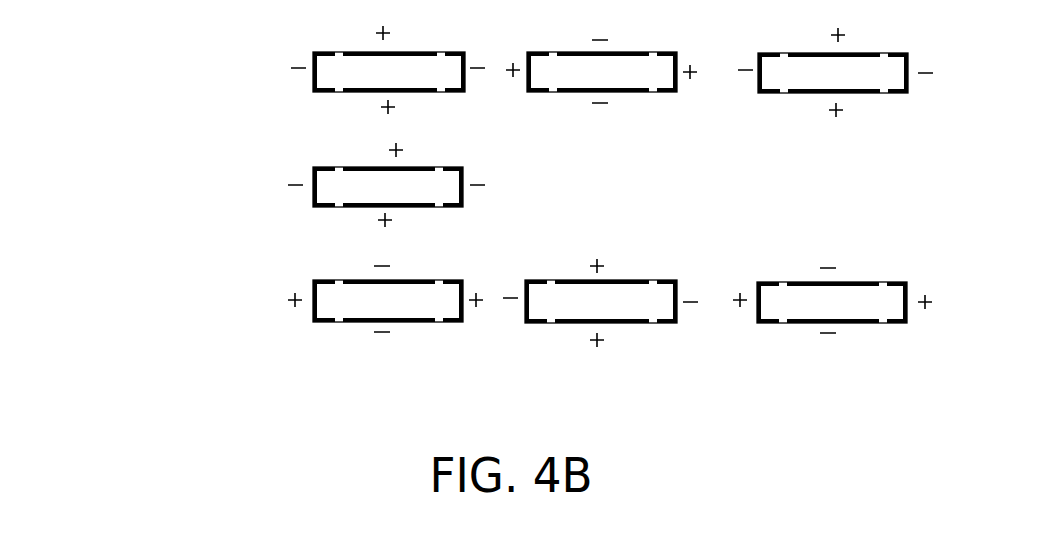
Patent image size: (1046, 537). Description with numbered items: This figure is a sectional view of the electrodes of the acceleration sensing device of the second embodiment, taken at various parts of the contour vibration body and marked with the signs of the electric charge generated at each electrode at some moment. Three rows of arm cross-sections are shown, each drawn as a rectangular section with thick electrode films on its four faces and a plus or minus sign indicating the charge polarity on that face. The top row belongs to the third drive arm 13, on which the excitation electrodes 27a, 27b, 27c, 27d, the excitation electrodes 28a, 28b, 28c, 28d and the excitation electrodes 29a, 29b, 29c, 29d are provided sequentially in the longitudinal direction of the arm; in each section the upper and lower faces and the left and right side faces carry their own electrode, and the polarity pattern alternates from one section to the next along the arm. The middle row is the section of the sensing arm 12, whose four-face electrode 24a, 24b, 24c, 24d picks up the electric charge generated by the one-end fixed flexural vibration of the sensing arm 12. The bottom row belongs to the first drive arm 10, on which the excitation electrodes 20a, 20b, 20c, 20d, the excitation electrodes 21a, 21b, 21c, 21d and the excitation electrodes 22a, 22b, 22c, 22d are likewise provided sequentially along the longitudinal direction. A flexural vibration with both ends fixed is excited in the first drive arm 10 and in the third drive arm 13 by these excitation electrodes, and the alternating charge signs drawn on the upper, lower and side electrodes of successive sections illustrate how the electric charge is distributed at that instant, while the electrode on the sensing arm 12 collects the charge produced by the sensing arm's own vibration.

The third drive arm 13 is at (511, 73).
The sensing arm 12 is at (312, 181).
The first drive arm 10 is at (506, 305).
The excitation electrode 27a is at (397, 51).
The excitation electrode 27b is at (372, 92).
The excitation electrode 27c is at (315, 58).
The excitation electrode 27d is at (467, 75).
The excitation electrode 28a is at (625, 51).
The excitation electrode 28b is at (598, 92).
The excitation electrode 28c is at (527, 57).
The excitation electrode 28d is at (678, 82).
The excitation electrode 29a is at (853, 52).
The excitation electrode 29b is at (865, 95).
The excitation electrode 29c is at (758, 57).
The excitation electrode 29d is at (908, 75).
The electrode 24a is at (387, 168).
The electrode 24b is at (403, 208).
The electrode 24c is at (313, 173).
The electrode 24d is at (463, 173).
The excitation electrode 20a is at (375, 280).
The excitation electrode 20b is at (360, 323).
The excitation electrode 20c is at (313, 290).
The excitation electrode 20d is at (463, 318).
The excitation electrode 21a is at (578, 280).
The excitation electrode 21b is at (580, 325).
The excitation electrode 21c is at (525, 285).
The excitation electrode 21d is at (677, 315).
The excitation electrode 22a is at (848, 282).
The excitation electrode 22b is at (862, 324).
The excitation electrode 22c is at (757, 288).
The excitation electrode 22d is at (907, 308).